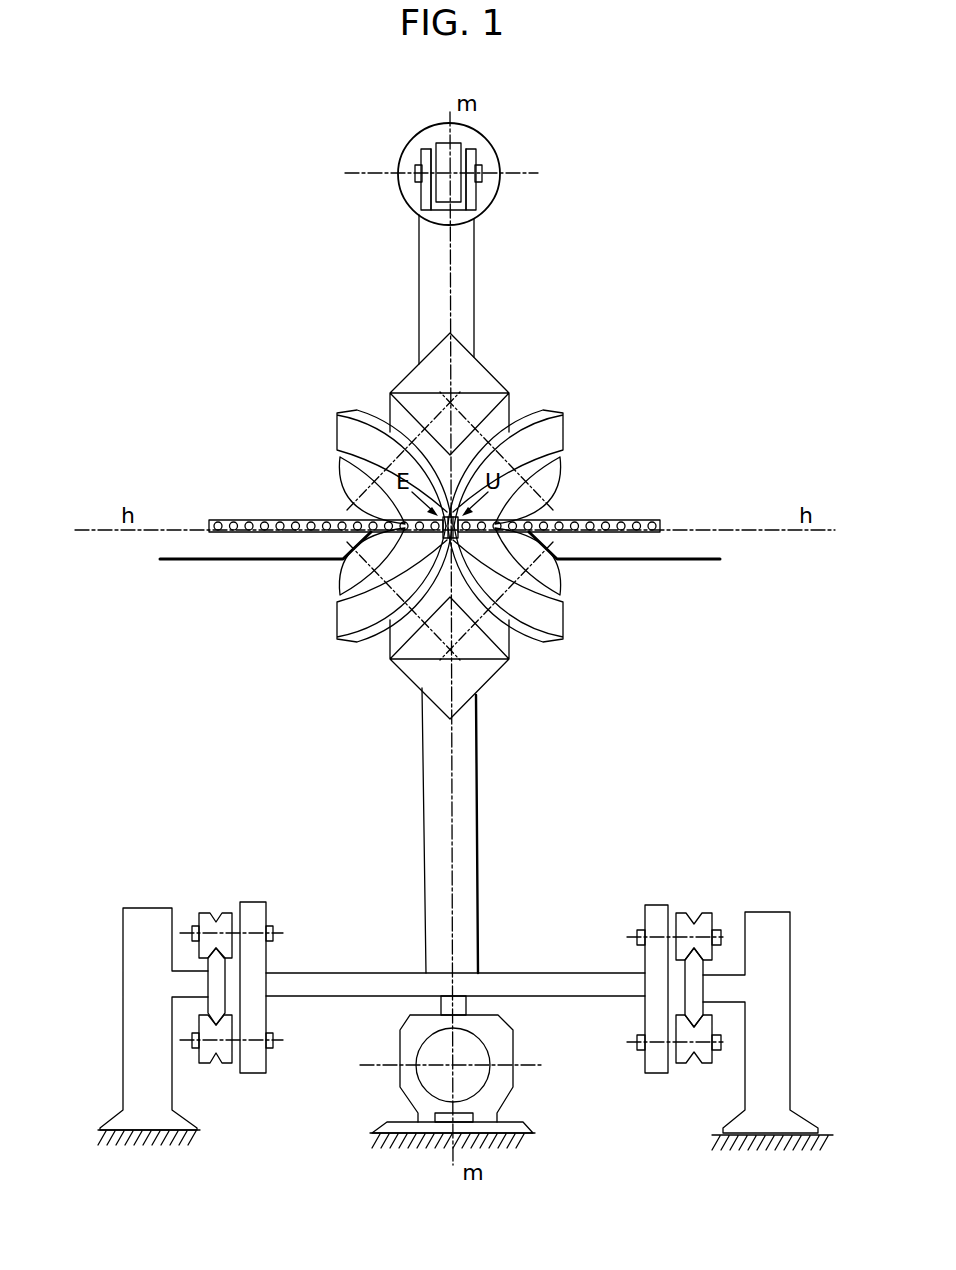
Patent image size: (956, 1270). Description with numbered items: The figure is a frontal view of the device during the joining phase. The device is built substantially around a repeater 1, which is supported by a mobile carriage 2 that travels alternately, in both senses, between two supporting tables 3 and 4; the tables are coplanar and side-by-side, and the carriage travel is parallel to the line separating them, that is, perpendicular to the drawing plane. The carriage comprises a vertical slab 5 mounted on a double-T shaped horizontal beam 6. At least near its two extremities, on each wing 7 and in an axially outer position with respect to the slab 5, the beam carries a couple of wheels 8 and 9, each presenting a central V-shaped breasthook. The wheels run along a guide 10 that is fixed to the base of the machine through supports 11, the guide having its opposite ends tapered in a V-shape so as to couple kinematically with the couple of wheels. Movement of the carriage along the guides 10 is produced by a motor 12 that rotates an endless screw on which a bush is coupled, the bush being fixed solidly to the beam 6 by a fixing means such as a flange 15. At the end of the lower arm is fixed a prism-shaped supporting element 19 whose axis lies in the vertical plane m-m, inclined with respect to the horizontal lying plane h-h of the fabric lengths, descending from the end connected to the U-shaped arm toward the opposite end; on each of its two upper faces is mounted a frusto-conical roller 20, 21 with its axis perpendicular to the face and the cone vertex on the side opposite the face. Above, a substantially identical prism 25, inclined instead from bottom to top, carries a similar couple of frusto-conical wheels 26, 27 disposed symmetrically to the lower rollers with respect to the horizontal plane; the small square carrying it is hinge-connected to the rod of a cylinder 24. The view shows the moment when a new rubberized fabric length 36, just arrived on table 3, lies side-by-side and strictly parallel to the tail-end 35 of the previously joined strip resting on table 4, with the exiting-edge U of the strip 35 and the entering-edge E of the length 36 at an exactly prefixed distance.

The repeater 1 is at (490, 771).
The carriage frame 2 is at (539, 948).
The supporting table 3 is at (233, 548).
The supporting table 4 is at (632, 547).
The vertical slab 5 is at (438, 795).
The horizontal beam 6 is at (345, 985).
The wing 7 is at (256, 905).
The wheel 8 is at (215, 912).
The wheel 9 is at (203, 1052).
The guide 10 is at (212, 987).
The support 11 is at (153, 907).
The motor 12 is at (412, 1087).
The flange 15 is at (470, 1000).
The supporting element 19 is at (423, 668).
The frusto-conical roller 20 is at (562, 618).
The frusto-conical roller 21 is at (347, 618).
The cylinder 24 is at (482, 197).
The prism 25 is at (473, 375).
The frusto-conical wheel 26 is at (337, 430).
The frusto-conical wheel 27 is at (555, 435).
The tail-end of the strip 35 is at (633, 520).
The rubberized fabric length 36 is at (247, 520).